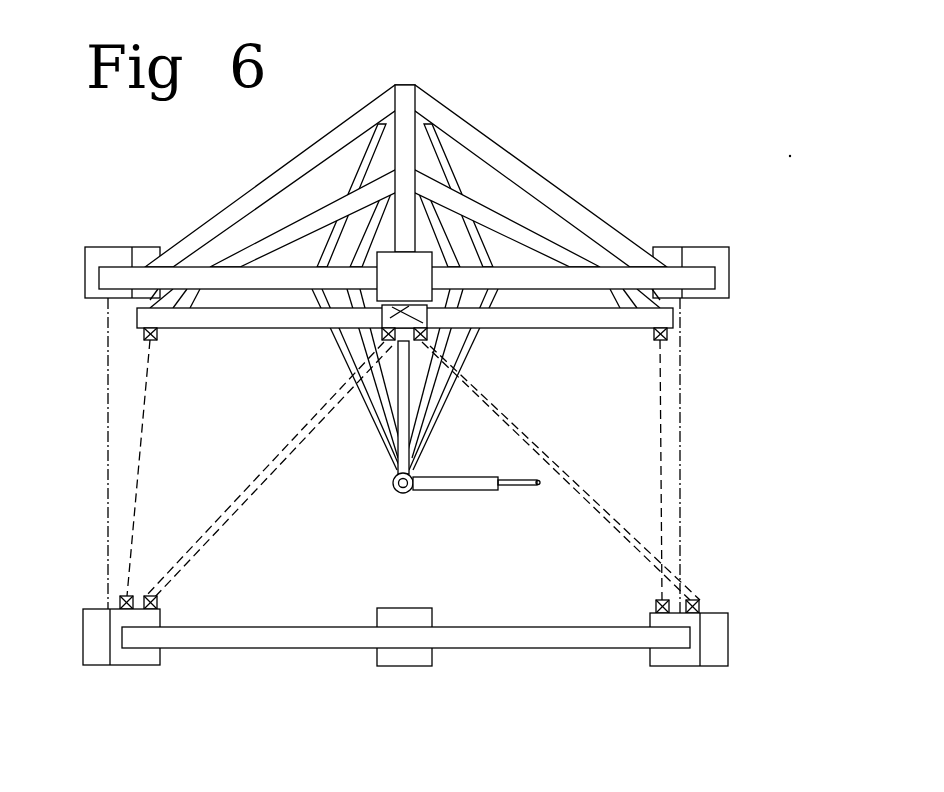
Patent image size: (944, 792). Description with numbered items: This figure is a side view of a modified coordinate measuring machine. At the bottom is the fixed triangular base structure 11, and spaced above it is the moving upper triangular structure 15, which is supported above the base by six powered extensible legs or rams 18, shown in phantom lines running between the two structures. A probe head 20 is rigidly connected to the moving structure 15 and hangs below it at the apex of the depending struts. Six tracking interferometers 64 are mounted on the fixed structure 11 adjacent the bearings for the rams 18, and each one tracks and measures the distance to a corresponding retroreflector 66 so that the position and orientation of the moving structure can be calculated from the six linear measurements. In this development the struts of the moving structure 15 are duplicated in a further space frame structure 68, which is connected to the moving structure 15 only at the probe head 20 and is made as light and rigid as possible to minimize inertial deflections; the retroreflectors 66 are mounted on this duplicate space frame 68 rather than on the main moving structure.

The triangular base structure 11 is at (272, 676).
The upper triangular structure 15 is at (490, 130).
The powered extensible legs or rams 18 is at (108, 478).
The probe head 20 is at (396, 473).
The tracking interferometers 64 is at (150, 595).
The retroreflectors 66 is at (147, 333).
The further space frame structure 68 is at (527, 224).